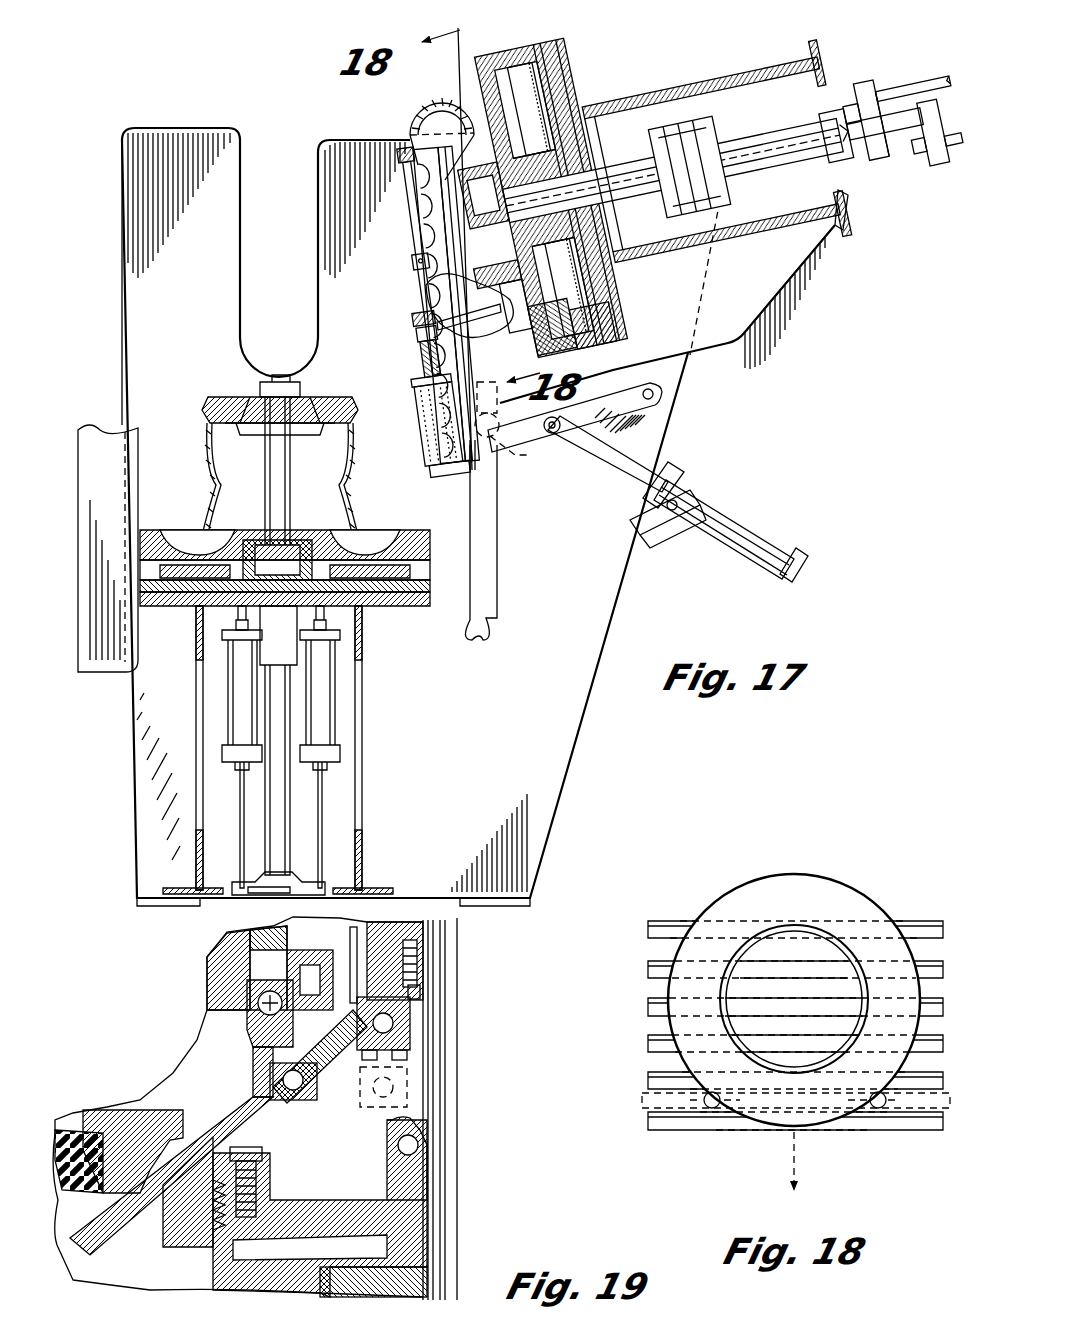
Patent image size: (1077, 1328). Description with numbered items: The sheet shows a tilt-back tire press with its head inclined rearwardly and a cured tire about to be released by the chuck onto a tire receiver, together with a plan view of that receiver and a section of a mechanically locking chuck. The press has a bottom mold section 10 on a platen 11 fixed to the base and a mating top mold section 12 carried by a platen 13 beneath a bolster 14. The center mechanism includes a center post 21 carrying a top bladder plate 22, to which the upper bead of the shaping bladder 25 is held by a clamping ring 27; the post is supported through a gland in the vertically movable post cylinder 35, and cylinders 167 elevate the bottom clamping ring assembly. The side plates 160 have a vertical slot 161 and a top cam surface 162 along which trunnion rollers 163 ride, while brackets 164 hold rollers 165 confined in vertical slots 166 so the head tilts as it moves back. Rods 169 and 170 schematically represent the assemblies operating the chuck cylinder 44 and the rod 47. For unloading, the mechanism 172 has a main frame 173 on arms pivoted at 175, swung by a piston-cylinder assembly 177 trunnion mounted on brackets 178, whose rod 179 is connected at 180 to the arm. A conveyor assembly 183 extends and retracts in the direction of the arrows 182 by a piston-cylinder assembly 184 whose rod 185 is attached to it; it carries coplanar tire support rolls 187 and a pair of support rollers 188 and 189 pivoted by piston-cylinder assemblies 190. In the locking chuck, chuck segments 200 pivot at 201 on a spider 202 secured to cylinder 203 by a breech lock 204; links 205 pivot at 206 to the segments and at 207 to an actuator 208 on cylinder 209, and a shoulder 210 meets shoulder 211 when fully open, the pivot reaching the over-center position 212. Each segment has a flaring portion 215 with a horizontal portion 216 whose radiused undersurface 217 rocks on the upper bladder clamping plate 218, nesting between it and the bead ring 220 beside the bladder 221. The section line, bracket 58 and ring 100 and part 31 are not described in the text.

In FIG. 17, the bottom mold section 10 is at (430, 552).
In FIG. 17, the platen 11 is at (430, 592).
In FIG. 17, the top mold section 12 is at (505, 58).
In FIG. 17, the platen 13 is at (545, 58).
In FIG. 17, the bolster 14 is at (575, 55).
In FIG. 17, the center post 21 is at (287, 463).
In FIG. 17, the top bladder plate 22 is at (252, 420).
In FIG. 17, the shaping bladder 25 is at (352, 492).
In FIG. 17, the clamping ring 27 is at (345, 397).
In FIG. 17, the bearing block 31 is at (326, 532).
In FIG. 17, the post cylinder 35 is at (293, 812).
In FIG. 17, the cylinder 44 is at (765, 137).
In FIG. 17, the rod 47 is at (915, 126).
In FIG. 17, the bracket 58 is at (472, 152).
In FIG. 17, the bead ring 100 is at (428, 98).
In FIG. 18, the bead ring 100 is at (856, 886).
In FIG. 17, the side plates 160 is at (600, 635).
In FIG. 17, the vertical slot 161 is at (238, 175).
In FIG. 17, the top cam surface 162 is at (343, 140).
In FIG. 17, the trunnion rollers 163 is at (705, 110).
In FIG. 17, the brackets 164 is at (735, 340).
In FIG. 17, the rollers 165 is at (498, 458).
In FIG. 17, the vertical slots 166 is at (492, 614).
In FIG. 17, the cylinders 167 is at (335, 718).
In FIG. 17, the rod 169 is at (880, 75).
In FIG. 17, the rod 170 is at (940, 150).
In FIG. 17, the unloading mechanism 172 is at (392, 281).
In FIG. 17, the main frame 173 is at (470, 485).
In FIG. 17, the pivot 175 is at (658, 401).
In FIG. 17, the piston-cylinder assembly 177 is at (743, 522).
In FIG. 17, the brackets 178 is at (688, 546).
In FIG. 17, the rod 179 is at (642, 478).
In FIG. 17, the connection 180 is at (552, 434).
In FIG. 17, the arrows 182 is at (372, 213).
In FIG. 17, the conveyor assembly 183 is at (402, 145).
In FIG. 17, the piston-cylinder assembly 184 is at (428, 440).
In FIG. 17, the rod 185 is at (404, 270).
In FIG. 17, the tire support rolls 187 is at (400, 172).
In FIG. 18, the tire support rolls 187 is at (660, 921).
In FIG. 17, the support roller 188 is at (418, 323).
In FIG. 18, the support roller 188 is at (712, 1110).
In FIG. 18, the support roller 189 is at (880, 1110).
In FIG. 17, the piston-cylinder assemblies 190 is at (420, 340).
In FIG. 19, the chuck segments 200 is at (245, 1060).
In FIG. 19, the pivot 201 is at (262, 1000).
In FIG. 19, the spider 202 is at (247, 962).
In FIG. 19, the cylinder 203 is at (440, 934).
In FIG. 19, the breech lock 204 is at (250, 952).
In FIG. 19, the links 205 is at (340, 1068).
In FIG. 19, the pivot 206 is at (298, 1097).
In FIG. 19, the pivot 207 is at (410, 1035).
In FIG. 19, the actuator 208 is at (422, 977).
In FIG. 19, the cylinder 209 is at (420, 952).
In FIG. 19, the shoulder 210 is at (352, 962).
In FIG. 19, the shoulder 211 is at (355, 988).
In FIG. 19, the pivot position 212 is at (395, 1089).
In FIG. 19, the flaring portion 215 is at (247, 1090).
In FIG. 19, the horizontal portion 216 is at (190, 1140).
In FIG. 19, the radiused undersurface 217 is at (258, 1166).
In FIG. 19, the upper bladder clamping plate 218 is at (185, 1220).
In FIG. 19, the bead ring 220 is at (106, 1115).
In FIG. 19, the bladder 221 is at (93, 1220).